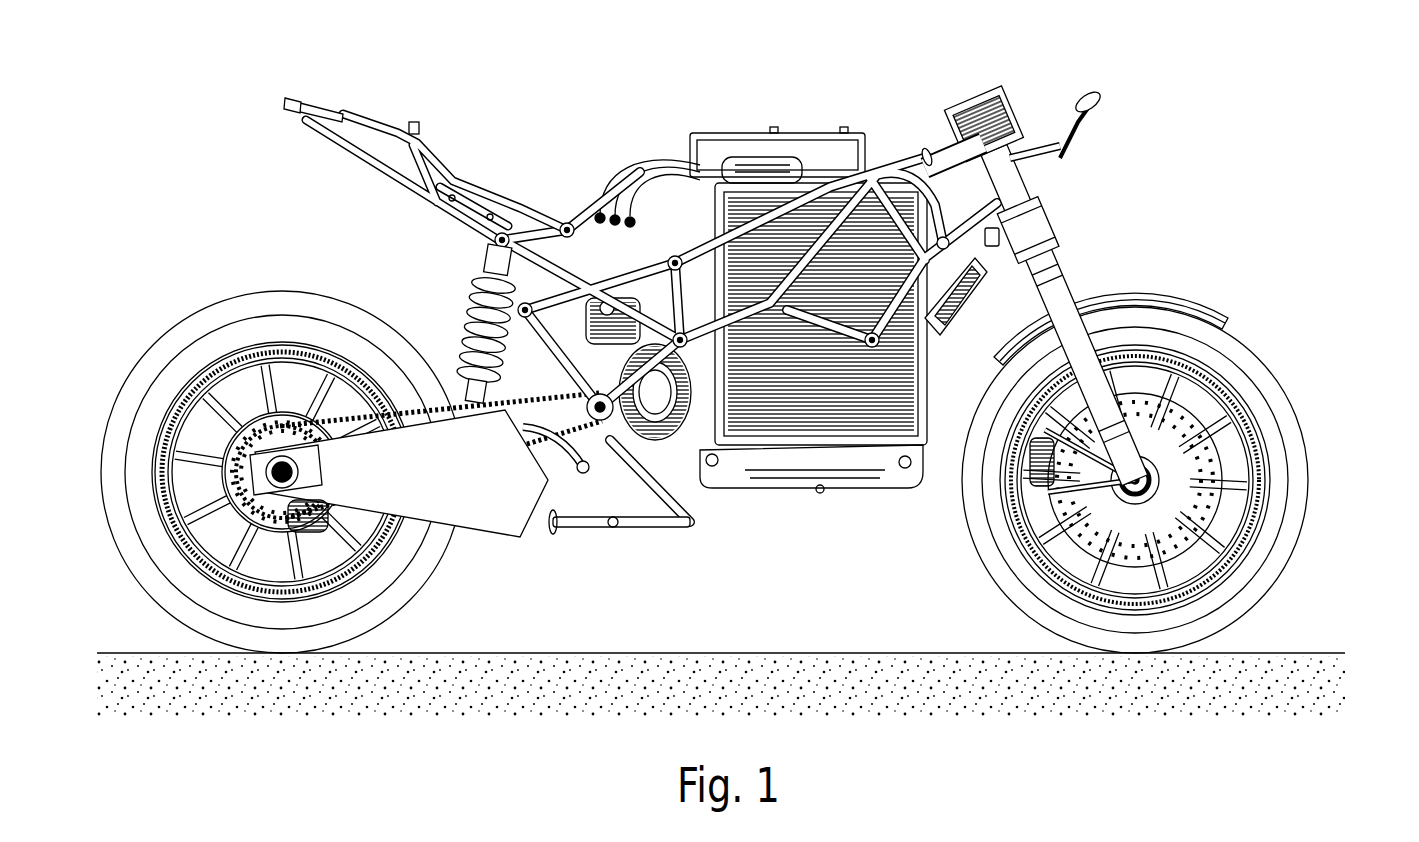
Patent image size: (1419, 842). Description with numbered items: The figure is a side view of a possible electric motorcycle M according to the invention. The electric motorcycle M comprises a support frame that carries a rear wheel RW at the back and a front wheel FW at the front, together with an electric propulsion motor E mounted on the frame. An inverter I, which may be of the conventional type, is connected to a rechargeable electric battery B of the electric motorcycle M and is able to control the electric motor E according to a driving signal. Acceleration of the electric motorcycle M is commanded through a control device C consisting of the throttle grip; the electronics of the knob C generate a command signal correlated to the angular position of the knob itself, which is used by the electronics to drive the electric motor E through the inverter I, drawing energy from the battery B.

The rear wheel RW is at (190, 331).
The front wheel FW is at (1300, 493).
The inverter I is at (813, 160).
The electric motorcycle M is at (852, 112).
The control device C is at (926, 153).
The rechargeable electric battery B is at (858, 405).
The electric propulsion motor E is at (594, 412).